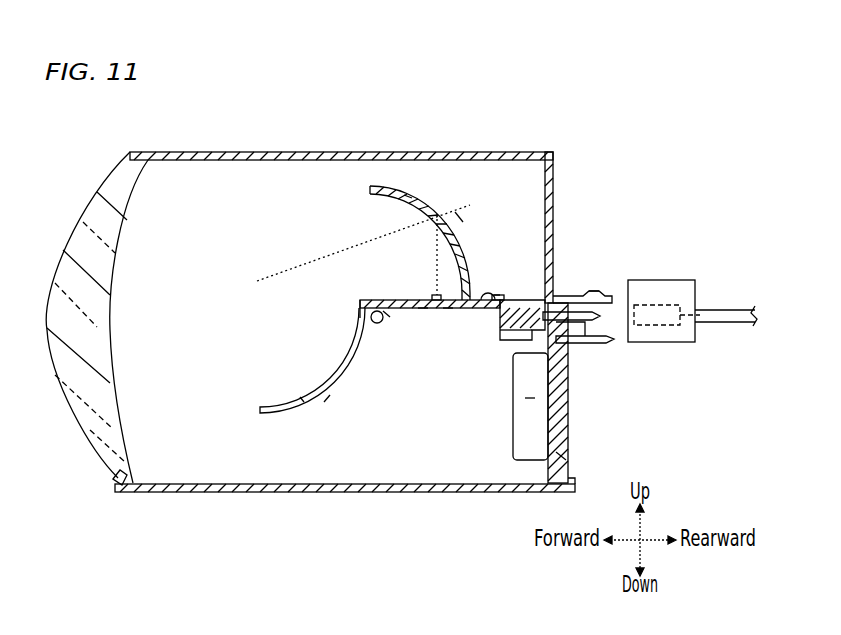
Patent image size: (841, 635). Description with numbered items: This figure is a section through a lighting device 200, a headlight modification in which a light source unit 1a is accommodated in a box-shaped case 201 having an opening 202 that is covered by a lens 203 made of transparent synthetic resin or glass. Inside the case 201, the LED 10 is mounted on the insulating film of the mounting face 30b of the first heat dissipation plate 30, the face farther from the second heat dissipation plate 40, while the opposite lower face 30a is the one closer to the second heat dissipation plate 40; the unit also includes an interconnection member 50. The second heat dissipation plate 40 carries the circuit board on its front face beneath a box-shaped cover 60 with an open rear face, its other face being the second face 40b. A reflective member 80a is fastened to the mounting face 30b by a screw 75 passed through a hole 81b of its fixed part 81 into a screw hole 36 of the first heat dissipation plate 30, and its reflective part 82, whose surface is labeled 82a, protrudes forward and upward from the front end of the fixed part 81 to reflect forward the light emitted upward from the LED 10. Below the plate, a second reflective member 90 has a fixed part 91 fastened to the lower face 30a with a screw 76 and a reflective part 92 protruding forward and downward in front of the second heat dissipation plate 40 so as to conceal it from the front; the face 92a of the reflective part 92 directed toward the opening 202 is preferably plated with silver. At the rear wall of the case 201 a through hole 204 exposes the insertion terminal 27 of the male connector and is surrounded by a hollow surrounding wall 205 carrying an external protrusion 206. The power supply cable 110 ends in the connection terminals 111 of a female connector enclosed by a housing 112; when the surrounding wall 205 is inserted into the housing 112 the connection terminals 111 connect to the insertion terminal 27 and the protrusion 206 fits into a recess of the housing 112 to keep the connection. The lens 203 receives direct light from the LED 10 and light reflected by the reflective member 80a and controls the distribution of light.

The light source unit 1a is at (448, 310).
The LED 10 is at (434, 297).
The insertion terminal 27 is at (585, 333).
The first heat dissipation plate 30 is at (455, 308).
The lower face of first heat dissipation plate 30a is at (422, 308).
The mounting face of first heat dissipation plate 30b is at (362, 300).
The screw hole 36 is at (506, 322).
The second heat dissipation plate 40 is at (547, 422).
The second face of second heat dissipation plate 40b is at (562, 456).
The interconnection member 50 is at (525, 312).
The cover 60 is at (533, 398).
The screw 75 is at (487, 292).
The screw 76 is at (376, 324).
The reflective member 80a is at (462, 216).
The fixed part 81 is at (500, 297).
The hole 81b is at (497, 294).
The reflective part 82 is at (428, 200).
The reflector end 82a is at (412, 199).
The reflective member 90 is at (333, 405).
The fixed part 91 is at (386, 316).
The reflective part 92 is at (349, 376).
The face of reflective part 92a is at (308, 398).
The power supply cable 110 is at (725, 311).
The connection terminals 111 is at (655, 330).
The housing 112 is at (665, 280).
The lighting device 200 is at (252, 493).
The case 201 is at (258, 151).
The opening 202 is at (112, 479).
The lens 203 is at (100, 215).
The through hole 204 is at (572, 343).
The surrounding wall 205 is at (566, 297).
The protrusion 206 is at (598, 290).